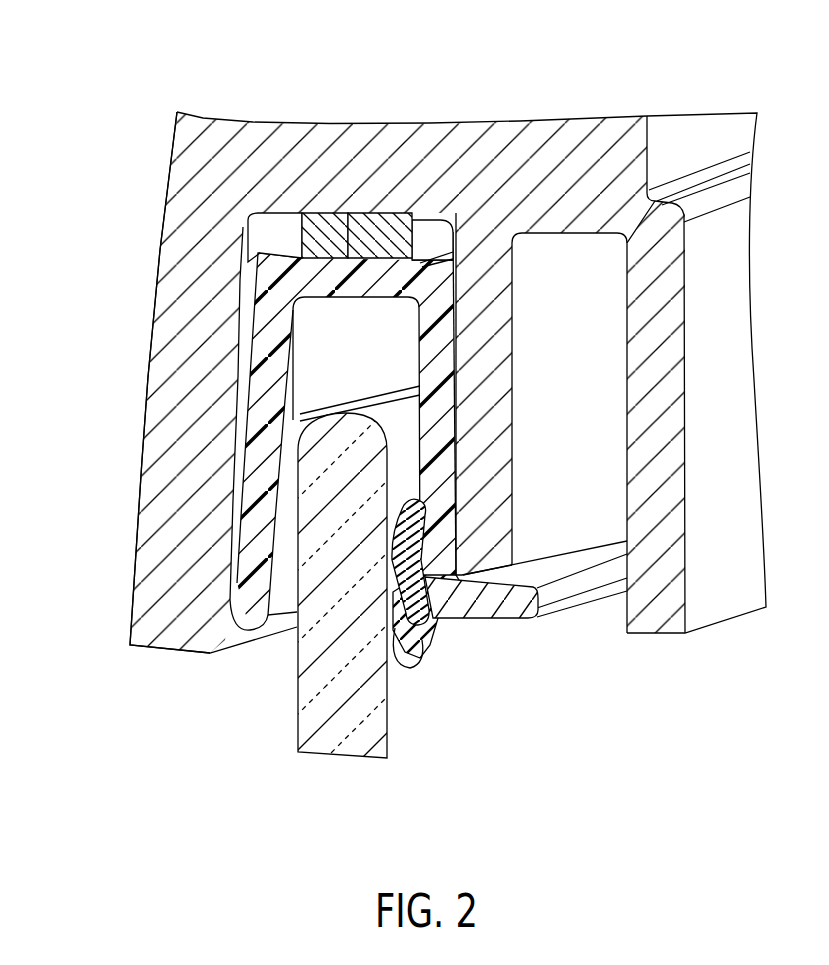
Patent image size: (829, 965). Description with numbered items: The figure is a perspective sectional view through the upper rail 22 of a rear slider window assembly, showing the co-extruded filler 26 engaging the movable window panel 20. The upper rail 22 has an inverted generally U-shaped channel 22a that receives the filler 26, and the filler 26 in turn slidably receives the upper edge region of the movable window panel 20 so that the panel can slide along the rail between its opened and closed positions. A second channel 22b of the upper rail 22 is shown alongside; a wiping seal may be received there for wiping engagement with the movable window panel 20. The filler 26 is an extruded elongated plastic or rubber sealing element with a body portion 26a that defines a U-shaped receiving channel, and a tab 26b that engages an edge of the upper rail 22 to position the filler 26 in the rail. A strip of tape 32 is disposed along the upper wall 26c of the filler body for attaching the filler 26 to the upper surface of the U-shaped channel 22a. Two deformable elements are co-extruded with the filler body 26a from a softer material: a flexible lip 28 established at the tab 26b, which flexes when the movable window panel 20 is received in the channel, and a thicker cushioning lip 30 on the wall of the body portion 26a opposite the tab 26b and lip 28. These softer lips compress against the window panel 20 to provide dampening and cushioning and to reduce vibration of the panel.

The movable window panel 20 is at (297, 748).
The upper rail 22 is at (100, 198).
The U-shaped channel 22a is at (143, 493).
The channel 22b is at (568, 287).
The filler 26 is at (218, 388).
The body portion 26a is at (258, 233).
The tab 26b is at (500, 620).
The upper wall 26c is at (427, 282).
The flexible lip 28 is at (422, 657).
The cushioning lip 30 is at (318, 348).
The strip of tape 32 is at (372, 236).